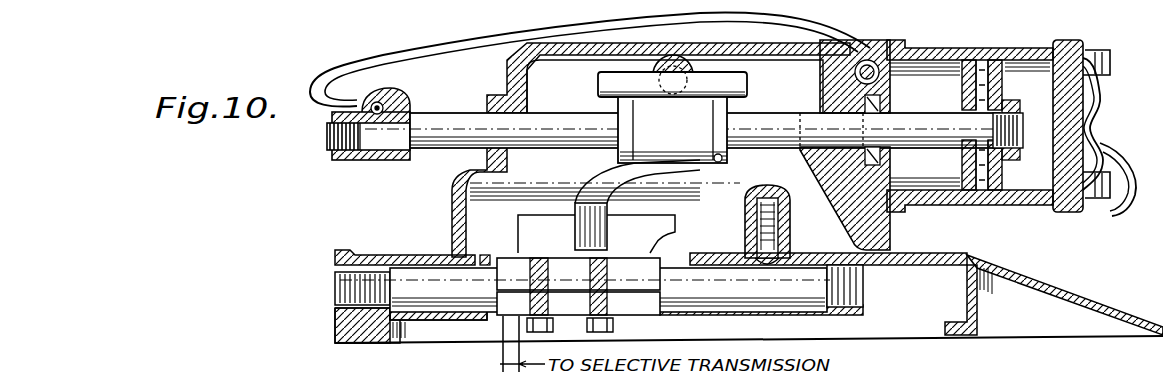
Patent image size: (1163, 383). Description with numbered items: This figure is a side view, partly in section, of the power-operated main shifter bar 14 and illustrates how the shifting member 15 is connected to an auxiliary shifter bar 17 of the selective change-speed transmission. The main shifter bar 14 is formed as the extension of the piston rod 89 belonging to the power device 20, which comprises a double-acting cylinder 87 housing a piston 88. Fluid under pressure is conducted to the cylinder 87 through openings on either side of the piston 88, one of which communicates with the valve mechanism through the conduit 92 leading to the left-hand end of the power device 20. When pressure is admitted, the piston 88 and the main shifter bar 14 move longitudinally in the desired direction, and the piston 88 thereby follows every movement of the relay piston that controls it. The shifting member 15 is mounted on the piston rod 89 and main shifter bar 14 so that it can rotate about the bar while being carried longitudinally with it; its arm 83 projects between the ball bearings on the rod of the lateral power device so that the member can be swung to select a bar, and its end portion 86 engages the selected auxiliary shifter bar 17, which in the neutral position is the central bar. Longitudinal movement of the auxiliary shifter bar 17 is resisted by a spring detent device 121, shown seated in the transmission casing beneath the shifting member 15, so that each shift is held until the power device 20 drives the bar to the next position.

The main shifter bar 14 is at (446, 140).
The shifting member 15 is at (708, 110).
The auxiliary shifter bar 17 is at (405, 283).
The power device 20 is at (1111, 86).
The arm 83 is at (738, 80).
The end portion 86 is at (620, 207).
The double-acting cylinder 87 is at (992, 52).
The piston 88 is at (975, 200).
The piston rod 89 is at (922, 134).
The conduit 92 is at (838, 42).
The spring detent device 121 is at (804, 240).